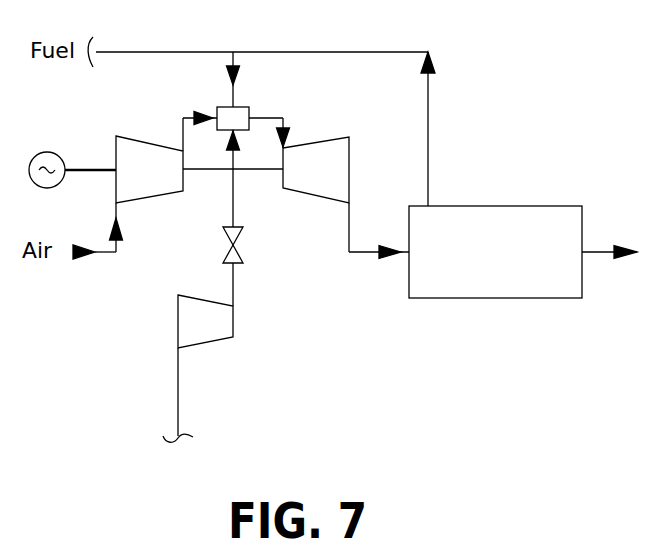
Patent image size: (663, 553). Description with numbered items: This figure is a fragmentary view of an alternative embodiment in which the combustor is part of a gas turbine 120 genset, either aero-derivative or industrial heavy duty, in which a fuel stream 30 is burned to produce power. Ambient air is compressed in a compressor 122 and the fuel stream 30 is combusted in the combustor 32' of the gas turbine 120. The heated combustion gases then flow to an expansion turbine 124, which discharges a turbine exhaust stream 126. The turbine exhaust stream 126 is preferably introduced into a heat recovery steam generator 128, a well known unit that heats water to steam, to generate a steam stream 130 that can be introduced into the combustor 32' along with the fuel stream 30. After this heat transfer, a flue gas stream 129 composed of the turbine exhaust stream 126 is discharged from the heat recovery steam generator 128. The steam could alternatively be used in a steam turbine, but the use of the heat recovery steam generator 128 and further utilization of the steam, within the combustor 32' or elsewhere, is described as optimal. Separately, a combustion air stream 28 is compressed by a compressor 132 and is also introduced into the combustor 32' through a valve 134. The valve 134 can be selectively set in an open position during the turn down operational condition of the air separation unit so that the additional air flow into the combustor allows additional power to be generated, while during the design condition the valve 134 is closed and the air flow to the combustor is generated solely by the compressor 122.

The fuel stream 30 is at (153, 52).
The combustor 32' is at (236, 149).
The compressor 122 is at (140, 186).
The expansion turbine 124 is at (308, 157).
The turbine exhaust stream 126 is at (360, 250).
The heat recovery steam generator 128 is at (497, 298).
The flue gas stream 129 is at (605, 250).
The steam stream 130 is at (430, 108).
The compressor 132 is at (222, 323).
The valve 134 is at (240, 240).
The combustion air stream 28 is at (178, 387).
The gas turbine 120 is at (80, 325).